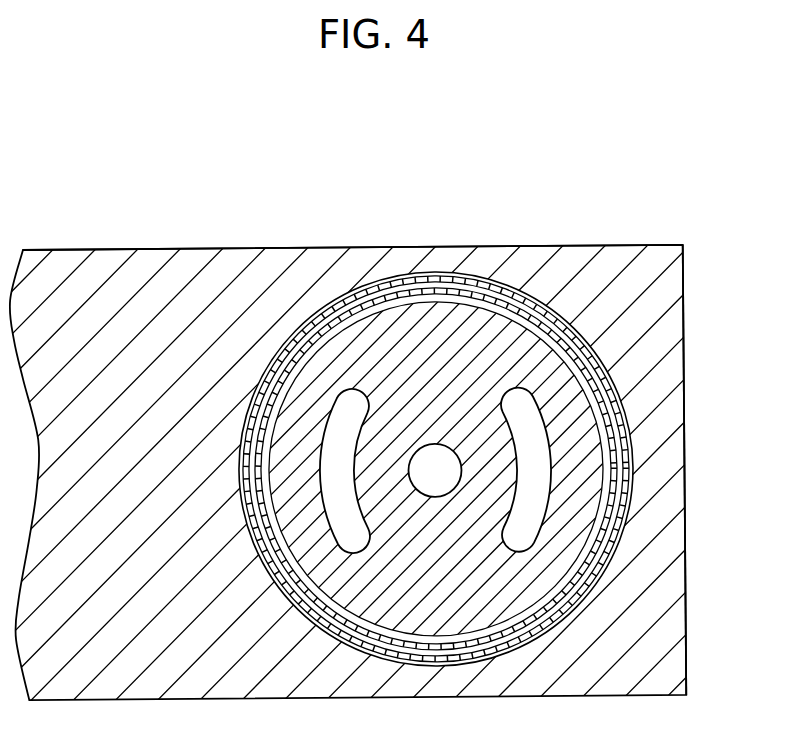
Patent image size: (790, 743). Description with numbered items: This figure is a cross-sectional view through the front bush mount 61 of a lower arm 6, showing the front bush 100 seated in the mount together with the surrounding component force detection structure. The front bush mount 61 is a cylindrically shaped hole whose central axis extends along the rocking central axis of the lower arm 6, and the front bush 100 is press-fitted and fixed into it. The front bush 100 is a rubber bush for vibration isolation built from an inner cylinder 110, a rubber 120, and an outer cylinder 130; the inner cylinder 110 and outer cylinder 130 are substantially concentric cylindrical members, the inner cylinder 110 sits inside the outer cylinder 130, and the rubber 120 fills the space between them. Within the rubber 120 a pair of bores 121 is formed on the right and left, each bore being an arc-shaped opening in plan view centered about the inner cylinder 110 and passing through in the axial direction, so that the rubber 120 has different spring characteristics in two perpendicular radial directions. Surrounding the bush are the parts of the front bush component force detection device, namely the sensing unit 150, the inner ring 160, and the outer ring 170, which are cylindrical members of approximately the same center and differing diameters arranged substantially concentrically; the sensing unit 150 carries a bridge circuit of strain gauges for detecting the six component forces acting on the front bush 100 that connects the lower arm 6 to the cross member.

The front bush 100 is at (184, 248).
The inner cylinder 110 is at (435, 246).
The front bush mount 61 is at (530, 246).
The lower arm 6 is at (684, 282).
The rubber 120 is at (684, 388).
The sensing unit 150 is at (684, 445).
The bores 121 is at (686, 502).
The inner ring 160 is at (686, 552).
The outer cylinder 130 is at (687, 597).
The outer ring 170 is at (687, 657).